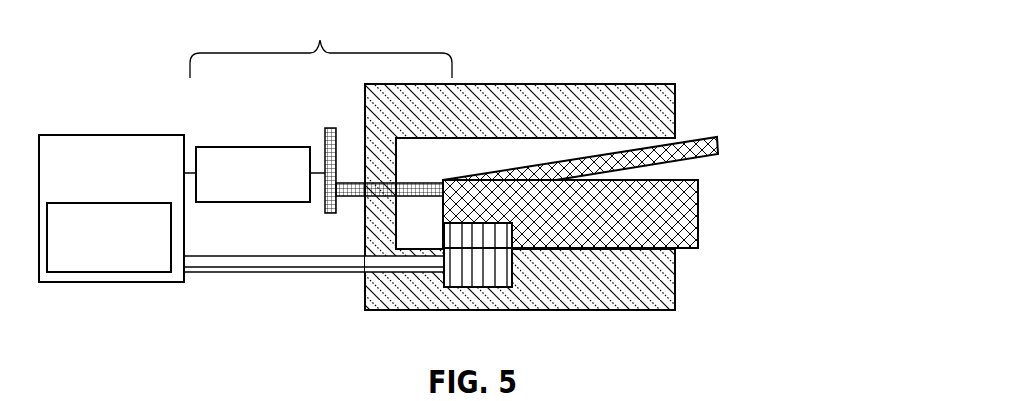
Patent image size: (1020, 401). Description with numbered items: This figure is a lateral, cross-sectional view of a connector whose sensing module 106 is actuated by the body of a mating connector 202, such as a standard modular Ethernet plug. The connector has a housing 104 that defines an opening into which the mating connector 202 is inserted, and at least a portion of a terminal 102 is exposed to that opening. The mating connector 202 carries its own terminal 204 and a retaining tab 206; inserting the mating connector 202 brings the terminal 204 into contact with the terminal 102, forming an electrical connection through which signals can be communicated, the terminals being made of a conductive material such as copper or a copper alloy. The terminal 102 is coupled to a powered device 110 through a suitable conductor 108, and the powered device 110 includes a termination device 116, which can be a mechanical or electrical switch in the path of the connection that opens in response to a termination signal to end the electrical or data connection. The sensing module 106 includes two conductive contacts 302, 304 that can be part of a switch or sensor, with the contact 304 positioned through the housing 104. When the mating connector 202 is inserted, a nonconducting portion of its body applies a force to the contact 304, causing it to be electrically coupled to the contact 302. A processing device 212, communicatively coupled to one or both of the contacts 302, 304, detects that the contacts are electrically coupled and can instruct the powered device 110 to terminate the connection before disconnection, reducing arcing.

The terminal 102 is at (459, 291).
The housing 104 is at (438, 130).
The sensing module 106 is at (321, 44).
The conductor 108 is at (202, 251).
The powered device 110 is at (111, 208).
The termination device 116 is at (109, 237).
The mating connector 202 is at (702, 200).
The terminal 204 is at (438, 242).
The retaining tab 206 is at (726, 154).
The processing device 212 is at (254, 174).
The contact 302 is at (327, 125).
The contact 304 is at (346, 201).